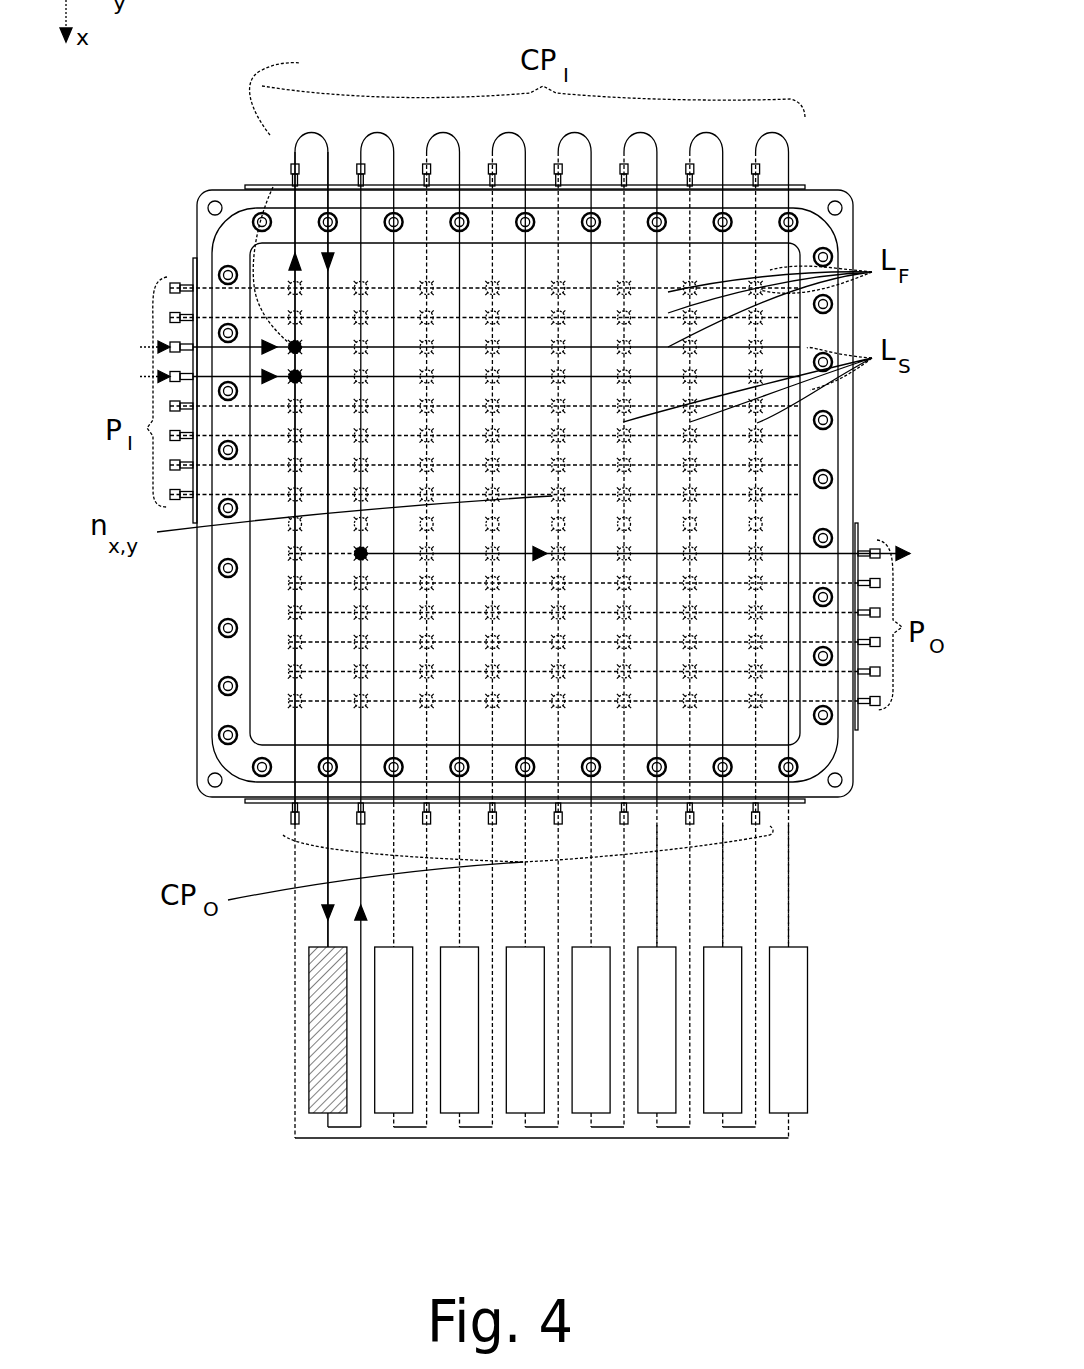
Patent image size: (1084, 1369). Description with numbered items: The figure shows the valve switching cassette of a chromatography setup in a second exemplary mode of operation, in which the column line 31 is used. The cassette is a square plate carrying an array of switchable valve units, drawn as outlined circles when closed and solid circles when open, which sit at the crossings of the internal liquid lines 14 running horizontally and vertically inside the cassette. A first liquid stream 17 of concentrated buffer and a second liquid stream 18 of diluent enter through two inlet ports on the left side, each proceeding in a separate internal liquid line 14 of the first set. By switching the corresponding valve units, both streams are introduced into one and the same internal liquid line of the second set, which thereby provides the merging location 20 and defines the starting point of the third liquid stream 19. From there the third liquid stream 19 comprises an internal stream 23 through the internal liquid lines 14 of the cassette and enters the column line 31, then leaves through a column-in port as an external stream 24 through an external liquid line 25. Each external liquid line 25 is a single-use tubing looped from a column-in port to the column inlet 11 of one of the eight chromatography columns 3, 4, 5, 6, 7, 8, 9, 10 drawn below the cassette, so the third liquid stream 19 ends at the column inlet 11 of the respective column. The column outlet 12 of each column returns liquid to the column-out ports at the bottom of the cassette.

The chromatography column 3 is at (309, 1020).
The chromatography column 4 is at (394, 1030).
The chromatography column 5 is at (460, 1030).
The chromatography column 6 is at (525, 1030).
The chromatography column 7 is at (591, 1030).
The chromatography column 8 is at (657, 1030).
The chromatography column 9 is at (723, 1030).
The chromatography column 10 is at (789, 1030).
The column inlet 11 is at (787, 947).
The column outlet 12 is at (455, 1118).
The internal liquid line 14 is at (433, 688).
The first liquid stream 17 is at (213, 347).
The second liquid stream 18 is at (207, 380).
The third liquid stream 19 is at (326, 527).
The merging location 20 is at (290, 373).
The internal stream 23 is at (289, 342).
The external stream 24 is at (326, 600).
The external liquid line 25 is at (443, 133).
The column line 31 is at (293, 228).